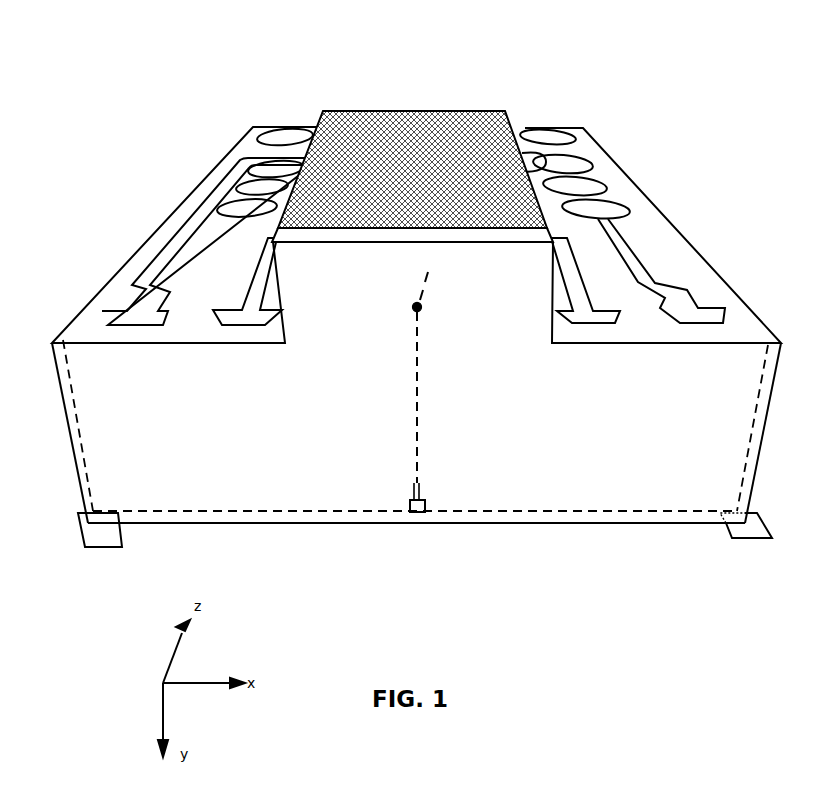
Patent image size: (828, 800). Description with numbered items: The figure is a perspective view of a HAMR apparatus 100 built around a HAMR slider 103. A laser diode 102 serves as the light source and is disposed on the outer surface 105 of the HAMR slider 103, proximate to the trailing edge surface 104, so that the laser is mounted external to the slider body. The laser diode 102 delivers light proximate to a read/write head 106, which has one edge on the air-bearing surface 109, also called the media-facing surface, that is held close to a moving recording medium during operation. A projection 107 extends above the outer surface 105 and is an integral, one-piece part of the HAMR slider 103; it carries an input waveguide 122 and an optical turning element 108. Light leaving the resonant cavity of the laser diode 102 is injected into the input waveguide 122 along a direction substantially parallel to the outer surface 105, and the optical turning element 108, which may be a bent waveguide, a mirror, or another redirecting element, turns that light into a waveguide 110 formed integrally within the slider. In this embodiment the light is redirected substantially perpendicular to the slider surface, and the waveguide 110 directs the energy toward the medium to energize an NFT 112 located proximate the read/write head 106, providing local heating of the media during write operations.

The HAMR apparatus 100 is at (592, 73).
The laser diode 102 is at (323, 111).
The HAMR slider 103 is at (243, 134).
The trailing edge surface 104 is at (107, 548).
The outer surface 105 is at (588, 158).
The read/write head 106 is at (420, 512).
The projection 107 is at (540, 234).
The optical turning element 108 is at (417, 307).
The air-bearing surface 109 is at (763, 540).
The waveguide 110 is at (423, 420).
The NFT 112 is at (415, 512).
The input waveguide 122 is at (432, 285).